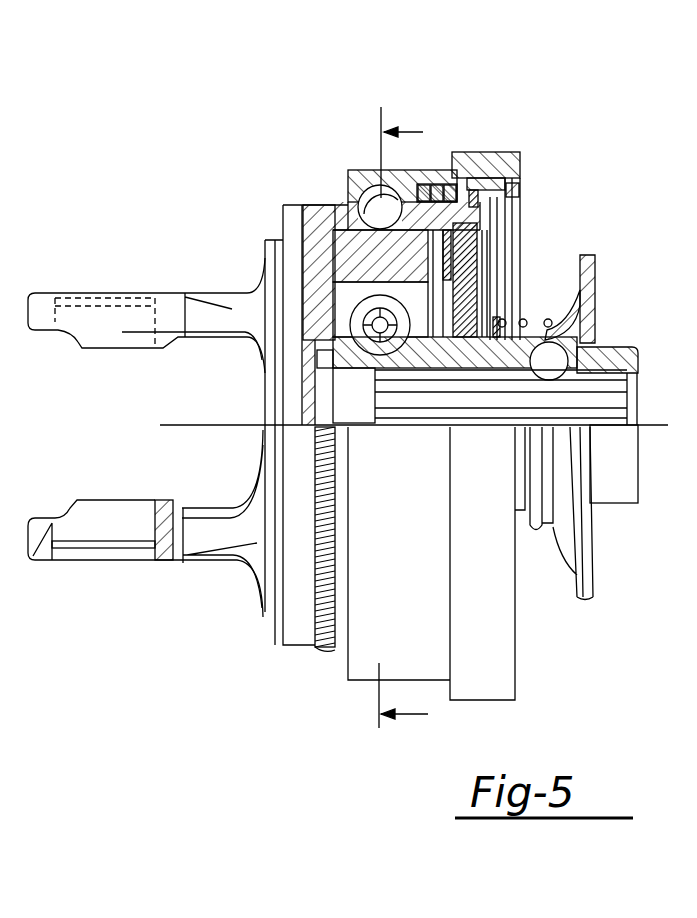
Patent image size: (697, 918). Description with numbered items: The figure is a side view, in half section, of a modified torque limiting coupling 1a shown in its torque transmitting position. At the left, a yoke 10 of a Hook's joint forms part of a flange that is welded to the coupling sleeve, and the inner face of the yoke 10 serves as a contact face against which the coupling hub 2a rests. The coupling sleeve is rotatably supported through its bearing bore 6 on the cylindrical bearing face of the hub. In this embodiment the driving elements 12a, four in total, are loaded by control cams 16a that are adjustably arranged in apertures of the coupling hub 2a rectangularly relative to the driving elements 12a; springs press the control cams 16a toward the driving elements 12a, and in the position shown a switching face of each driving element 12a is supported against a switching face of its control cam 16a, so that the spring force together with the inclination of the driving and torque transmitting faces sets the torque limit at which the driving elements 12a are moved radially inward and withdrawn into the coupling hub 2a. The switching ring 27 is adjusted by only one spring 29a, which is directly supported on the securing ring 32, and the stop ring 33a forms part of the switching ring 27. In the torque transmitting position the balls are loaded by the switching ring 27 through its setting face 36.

The coupling 1a is at (207, 167).
The yoke 10 is at (295, 305).
The driving element 12a is at (352, 263).
The control cam 16a is at (352, 293).
The setting face 36 is at (350, 200).
The spring 29a is at (440, 187).
The switching ring 27 is at (477, 158).
The securing ring 32 is at (480, 196).
The stop ring 33a is at (513, 189).
The coupling hub 2a is at (617, 348).
The bearing bore 6 is at (390, 419).